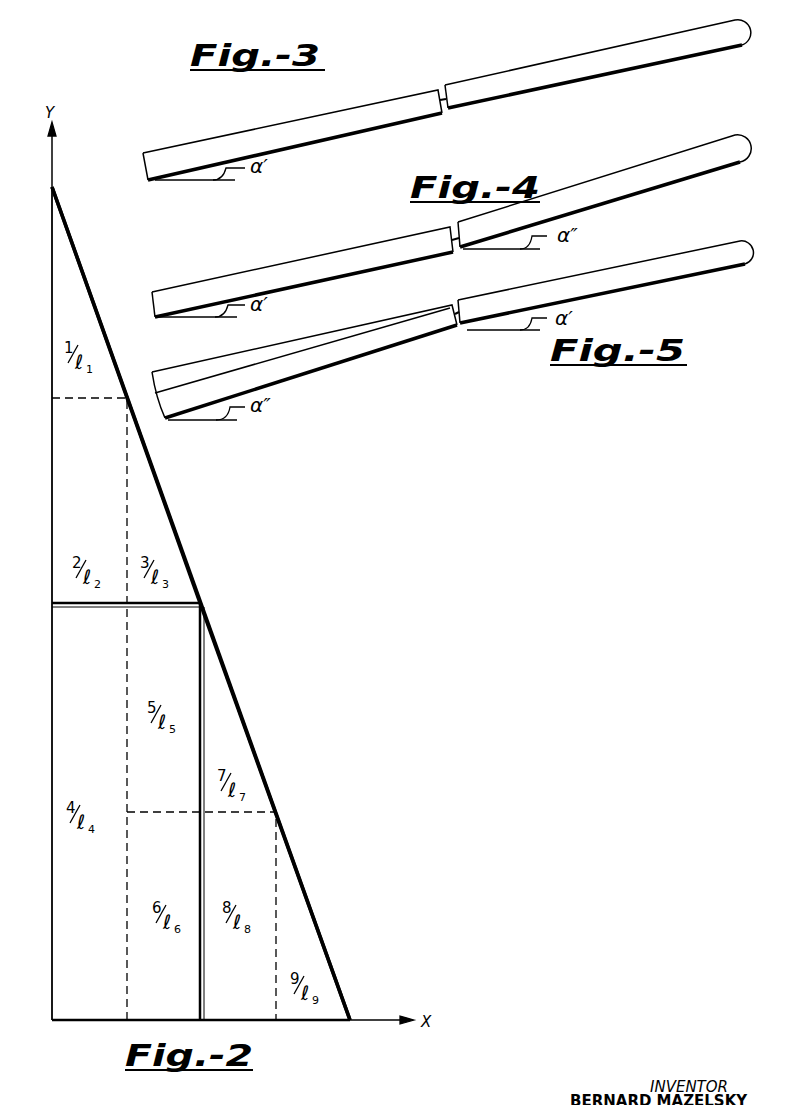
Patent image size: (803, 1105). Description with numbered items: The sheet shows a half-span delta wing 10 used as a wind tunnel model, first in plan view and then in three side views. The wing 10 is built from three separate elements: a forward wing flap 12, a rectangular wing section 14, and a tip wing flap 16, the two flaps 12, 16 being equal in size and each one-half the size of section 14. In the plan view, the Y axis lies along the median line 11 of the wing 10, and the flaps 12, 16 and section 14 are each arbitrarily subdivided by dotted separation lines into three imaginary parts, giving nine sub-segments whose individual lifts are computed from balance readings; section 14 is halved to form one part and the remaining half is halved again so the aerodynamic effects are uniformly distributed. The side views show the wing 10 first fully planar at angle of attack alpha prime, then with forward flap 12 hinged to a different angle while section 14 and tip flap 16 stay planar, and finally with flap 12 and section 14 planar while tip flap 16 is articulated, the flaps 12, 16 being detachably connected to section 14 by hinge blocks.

In FIG. 2, the half-span delta wing 10 is at (172, 524).
In FIG. 2, the median line 11 is at (52, 519).
In FIG. 2, the forward wing flap 12 is at (157, 483).
In FIG. 3, the forward wing flap 12 is at (566, 85).
In FIG. 4, the forward wing flap 12 is at (626, 196).
In FIG. 5, the forward wing flap 12 is at (634, 287).
In FIG. 2, the wing section 14 is at (52, 737).
In FIG. 5, the wing section 14 is at (315, 336).
In FIG. 2, the tip wing flap 16 is at (249, 741).
In FIG. 3, the tip wing flap 16 is at (300, 118).
In FIG. 4, the tip wing flap 16 is at (306, 258).
In FIG. 5, the tip wing flap 16 is at (318, 370).